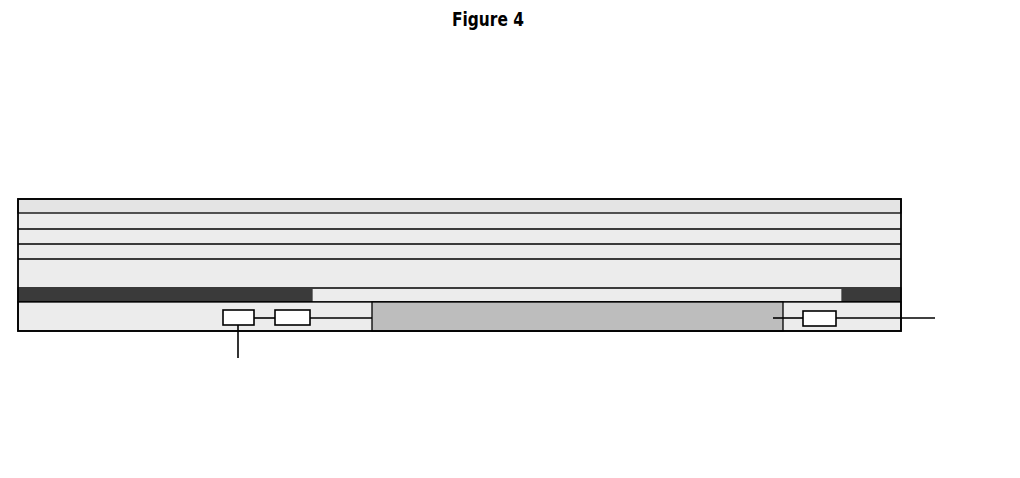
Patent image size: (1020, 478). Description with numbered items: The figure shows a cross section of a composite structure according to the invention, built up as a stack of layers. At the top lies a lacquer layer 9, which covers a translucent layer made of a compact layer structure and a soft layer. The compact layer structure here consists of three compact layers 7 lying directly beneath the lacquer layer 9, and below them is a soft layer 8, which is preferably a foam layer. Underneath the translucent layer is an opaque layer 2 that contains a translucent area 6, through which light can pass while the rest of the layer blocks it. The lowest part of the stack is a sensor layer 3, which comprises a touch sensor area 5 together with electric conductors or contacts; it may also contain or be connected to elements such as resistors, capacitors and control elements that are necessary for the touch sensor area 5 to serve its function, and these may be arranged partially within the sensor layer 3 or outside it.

The opaque layer 2 is at (50, 296).
The sensor layer 3 is at (148, 318).
The touch sensor area 5 is at (540, 318).
The translucent area 6 is at (740, 295).
The compact layer 7 is at (120, 219).
The soft layer 8 is at (298, 274).
The lacquer layer 9 is at (45, 205).